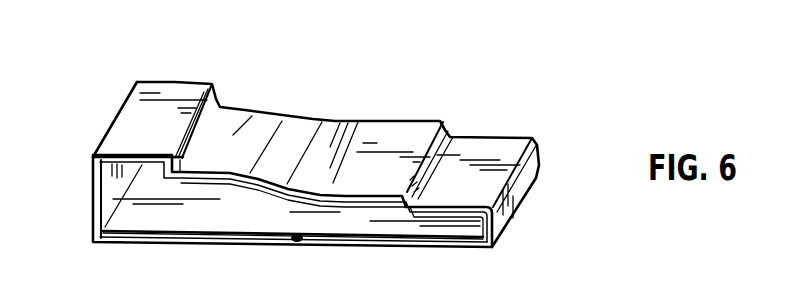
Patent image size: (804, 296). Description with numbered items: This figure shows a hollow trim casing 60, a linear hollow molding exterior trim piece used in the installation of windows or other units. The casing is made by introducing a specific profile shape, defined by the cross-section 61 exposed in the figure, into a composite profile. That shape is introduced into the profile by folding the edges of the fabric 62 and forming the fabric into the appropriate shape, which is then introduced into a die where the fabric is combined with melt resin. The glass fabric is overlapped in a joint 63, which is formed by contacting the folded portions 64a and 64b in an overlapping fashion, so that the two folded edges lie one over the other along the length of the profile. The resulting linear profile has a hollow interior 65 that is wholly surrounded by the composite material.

The hollow trim casing 60 is at (316, 144).
The cross-section 61 is at (93, 190).
The fabric 62 is at (293, 261).
The joint 63 is at (301, 242).
The folded portion 64a is at (297, 235).
The folded portion 64b is at (296, 241).
The hollow interior 65 is at (195, 192).